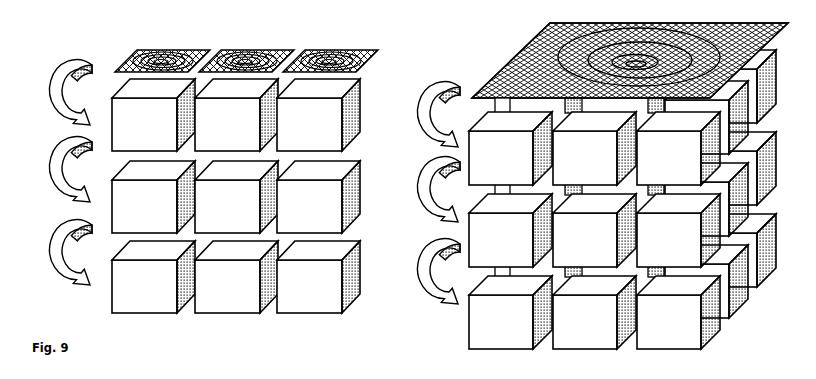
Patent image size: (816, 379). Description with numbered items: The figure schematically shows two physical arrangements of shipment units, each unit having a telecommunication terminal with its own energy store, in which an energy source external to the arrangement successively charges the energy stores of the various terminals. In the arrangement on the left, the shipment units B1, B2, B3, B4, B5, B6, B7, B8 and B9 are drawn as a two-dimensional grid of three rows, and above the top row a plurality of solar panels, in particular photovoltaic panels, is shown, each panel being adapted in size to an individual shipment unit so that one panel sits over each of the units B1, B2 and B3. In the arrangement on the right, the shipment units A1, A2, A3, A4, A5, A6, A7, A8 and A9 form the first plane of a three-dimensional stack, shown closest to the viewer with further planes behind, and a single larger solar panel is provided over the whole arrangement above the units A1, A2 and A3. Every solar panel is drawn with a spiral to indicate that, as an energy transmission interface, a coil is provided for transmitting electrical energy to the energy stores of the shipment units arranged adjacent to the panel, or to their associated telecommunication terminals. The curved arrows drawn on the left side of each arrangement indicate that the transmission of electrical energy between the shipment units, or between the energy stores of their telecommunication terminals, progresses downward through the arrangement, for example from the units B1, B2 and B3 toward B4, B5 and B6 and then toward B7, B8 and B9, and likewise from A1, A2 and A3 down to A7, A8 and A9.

The shipment unit A1 is at (510, 148).
The shipment unit A2 is at (594, 148).
The shipment unit A3 is at (678, 148).
The shipment unit A4 is at (510, 230).
The shipment unit A5 is at (594, 230).
The shipment unit A6 is at (678, 230).
The shipment unit A7 is at (510, 312).
The shipment unit A8 is at (594, 312).
The shipment unit A9 is at (678, 312).
The shipment unit B1 is at (153, 115).
The shipment unit B2 is at (236, 115).
The shipment unit B3 is at (318, 115).
The shipment unit B4 is at (153, 197).
The shipment unit B5 is at (236, 197).
The shipment unit B6 is at (318, 197).
The shipment unit B7 is at (153, 277).
The shipment unit B8 is at (236, 277).
The shipment unit B9 is at (318, 277).